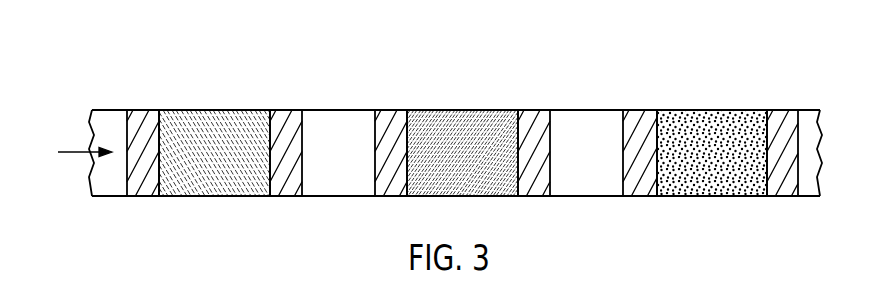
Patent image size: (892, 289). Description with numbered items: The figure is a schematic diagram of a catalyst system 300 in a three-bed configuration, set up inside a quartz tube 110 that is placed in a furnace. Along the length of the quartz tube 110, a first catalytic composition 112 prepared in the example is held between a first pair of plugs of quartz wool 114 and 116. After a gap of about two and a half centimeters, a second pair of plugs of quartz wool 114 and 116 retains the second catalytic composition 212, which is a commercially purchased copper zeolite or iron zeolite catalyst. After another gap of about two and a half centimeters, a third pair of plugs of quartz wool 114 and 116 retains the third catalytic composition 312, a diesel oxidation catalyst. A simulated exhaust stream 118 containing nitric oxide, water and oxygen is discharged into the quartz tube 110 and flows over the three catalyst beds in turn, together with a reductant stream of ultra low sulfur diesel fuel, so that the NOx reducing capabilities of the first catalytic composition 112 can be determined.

The catalyst system 300 is at (641, 36).
The quartz tube 110 is at (583, 197).
The first catalytic composition 112 is at (212, 110).
The plug of quartz wool 114 is at (143, 110).
The plug of quartz wool 116 is at (288, 110).
The simulated exhaust stream 118 is at (88, 151).
The second catalytic composition 212 is at (461, 110).
The third catalytic composition 312 is at (708, 110).